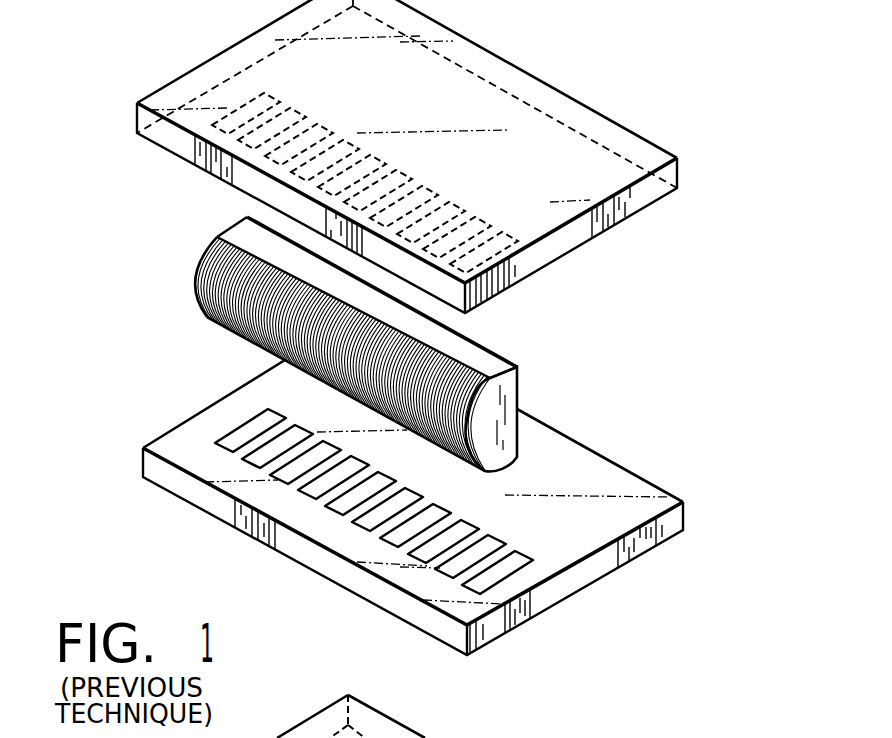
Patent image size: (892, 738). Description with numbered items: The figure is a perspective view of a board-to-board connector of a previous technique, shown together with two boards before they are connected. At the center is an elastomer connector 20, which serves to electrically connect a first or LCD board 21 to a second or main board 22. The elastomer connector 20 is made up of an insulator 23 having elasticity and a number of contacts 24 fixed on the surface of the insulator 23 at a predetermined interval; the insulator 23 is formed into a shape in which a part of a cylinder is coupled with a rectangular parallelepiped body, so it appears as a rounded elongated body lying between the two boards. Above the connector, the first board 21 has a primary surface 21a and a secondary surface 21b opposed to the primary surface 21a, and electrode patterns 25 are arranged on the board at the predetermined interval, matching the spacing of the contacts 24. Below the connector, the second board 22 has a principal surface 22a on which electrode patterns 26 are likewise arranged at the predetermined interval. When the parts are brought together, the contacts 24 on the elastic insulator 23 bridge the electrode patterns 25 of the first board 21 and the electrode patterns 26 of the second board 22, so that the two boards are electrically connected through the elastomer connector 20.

The elastomer connector 20 is at (530, 367).
The first or LCD board 21 is at (530, 77).
The primary surface 21a is at (640, 148).
The secondary surface 21b is at (647, 212).
The second or main board 22 is at (590, 575).
The principal surface 22a is at (610, 477).
The insulator 23 is at (510, 400).
The contacts 24 is at (463, 334).
The electrode patterns 25 is at (247, 117).
The electrode patterns 26 is at (510, 565).